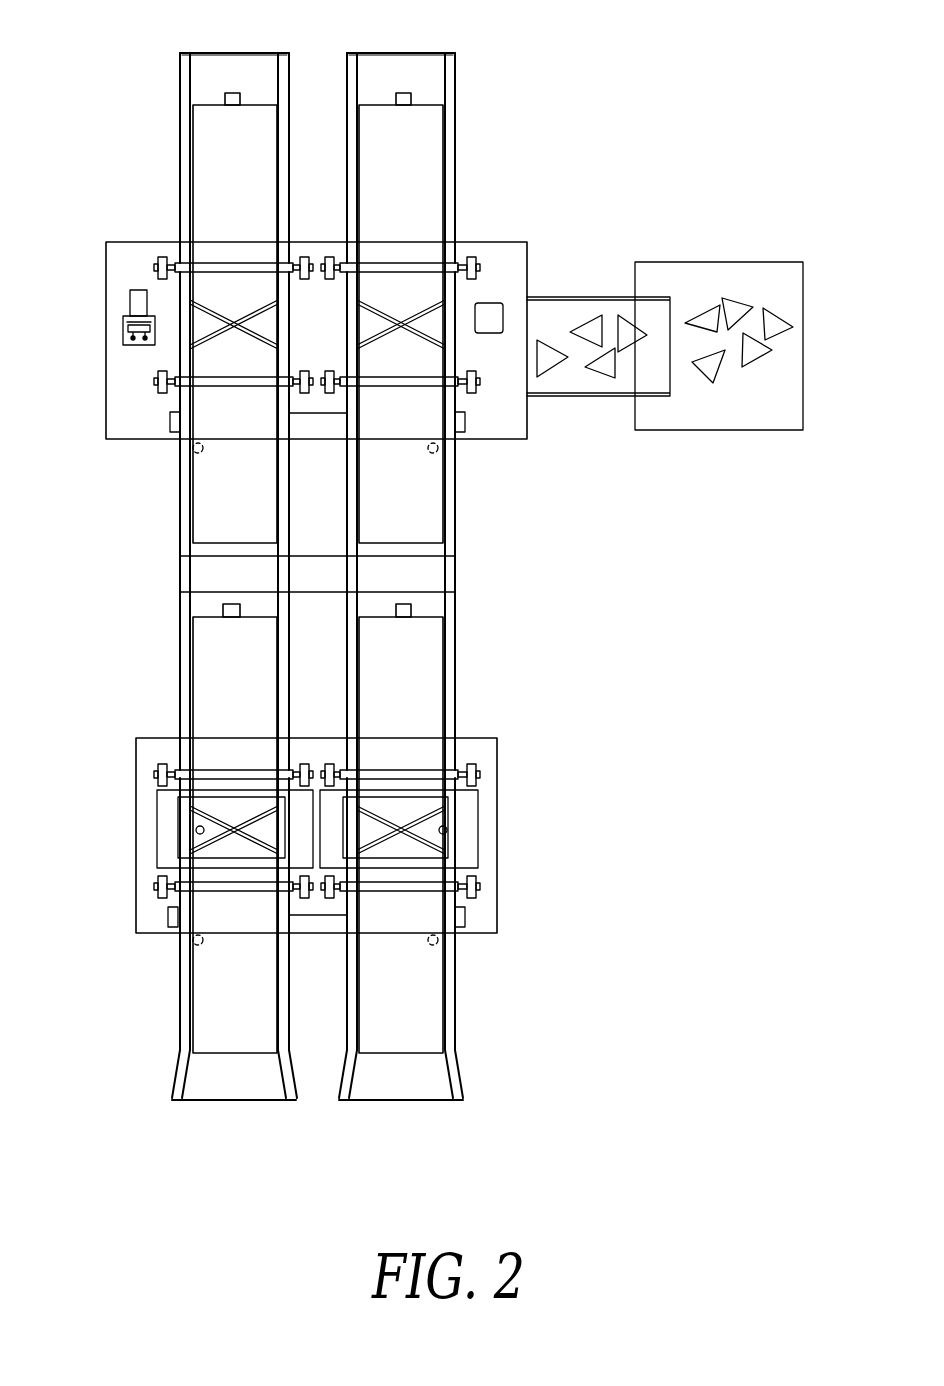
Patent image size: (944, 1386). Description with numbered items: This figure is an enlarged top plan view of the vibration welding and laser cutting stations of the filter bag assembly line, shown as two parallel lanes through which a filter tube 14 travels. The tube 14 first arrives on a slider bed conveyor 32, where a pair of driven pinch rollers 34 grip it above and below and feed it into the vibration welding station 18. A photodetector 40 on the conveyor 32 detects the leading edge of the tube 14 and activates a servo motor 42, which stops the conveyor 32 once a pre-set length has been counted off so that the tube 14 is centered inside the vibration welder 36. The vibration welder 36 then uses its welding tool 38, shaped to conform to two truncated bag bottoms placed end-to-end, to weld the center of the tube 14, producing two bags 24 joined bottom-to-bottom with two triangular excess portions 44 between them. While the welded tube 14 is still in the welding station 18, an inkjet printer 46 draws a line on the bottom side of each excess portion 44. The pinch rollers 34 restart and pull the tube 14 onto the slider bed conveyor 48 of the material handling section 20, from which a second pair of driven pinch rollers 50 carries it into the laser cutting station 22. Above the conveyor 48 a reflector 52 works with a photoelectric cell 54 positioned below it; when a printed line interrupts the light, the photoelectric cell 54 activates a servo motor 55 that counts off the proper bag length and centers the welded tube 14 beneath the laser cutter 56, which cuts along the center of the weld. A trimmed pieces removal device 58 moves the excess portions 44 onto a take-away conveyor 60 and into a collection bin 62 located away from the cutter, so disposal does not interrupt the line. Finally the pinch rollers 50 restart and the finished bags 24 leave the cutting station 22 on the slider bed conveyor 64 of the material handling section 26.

The filter tube 14 is at (247, 1007).
The vibration welding station 18 is at (498, 760).
The material handling section 20 is at (457, 602).
The laser cutting station 22 is at (127, 240).
The filter bag 24 is at (247, 190).
The material handling section 26 is at (180, 100).
The slider bed conveyor 32 is at (450, 1020).
The driven pinch rollers 34 is at (183, 770).
The vibration welder 36 is at (472, 843).
The welding tool 38 is at (232, 830).
The photodetector 40 is at (192, 943).
The servo motor 42 is at (168, 912).
The triangular excess portions 44 is at (710, 368).
The inkjet printer 46 is at (198, 832).
The slider bed conveyor 48 is at (187, 540).
The driven pinch rollers 50 is at (460, 262).
The reflector 52 is at (316, 483).
The photoelectric cell 54 is at (185, 452).
The servo motor 55 is at (172, 420).
The laser cutter 56 is at (131, 300).
The trimmed pieces removal device 58 is at (489, 306).
The take-away conveyor 60 is at (557, 312).
The collection bin 62 is at (724, 346).
The slider bed conveyor 64 is at (238, 62).